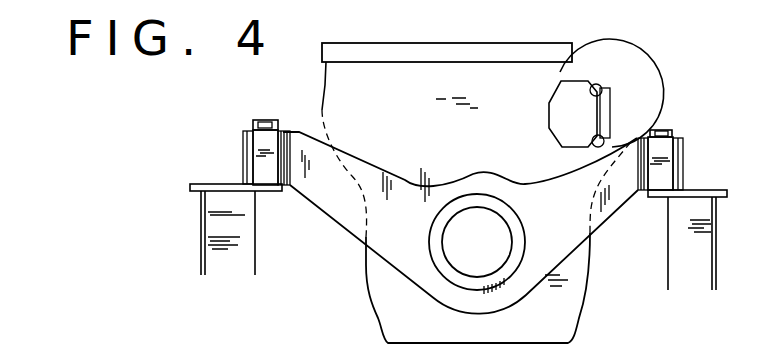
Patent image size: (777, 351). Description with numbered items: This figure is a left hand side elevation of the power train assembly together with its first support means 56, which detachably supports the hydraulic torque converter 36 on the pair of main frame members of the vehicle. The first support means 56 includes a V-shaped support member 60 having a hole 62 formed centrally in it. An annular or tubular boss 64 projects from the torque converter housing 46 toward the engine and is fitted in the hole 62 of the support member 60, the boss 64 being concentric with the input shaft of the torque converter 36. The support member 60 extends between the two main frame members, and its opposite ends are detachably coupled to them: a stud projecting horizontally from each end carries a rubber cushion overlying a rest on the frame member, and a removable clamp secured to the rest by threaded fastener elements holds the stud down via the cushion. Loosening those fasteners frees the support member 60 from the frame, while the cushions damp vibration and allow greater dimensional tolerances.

The hydraulic torque converter 36 is at (515, 43).
The torque converter housing 46 is at (572, 64).
The first support means 56 is at (465, 218).
The V-shaped support member 60 is at (598, 206).
The hole 62 is at (518, 218).
The annular boss 64 is at (524, 240).